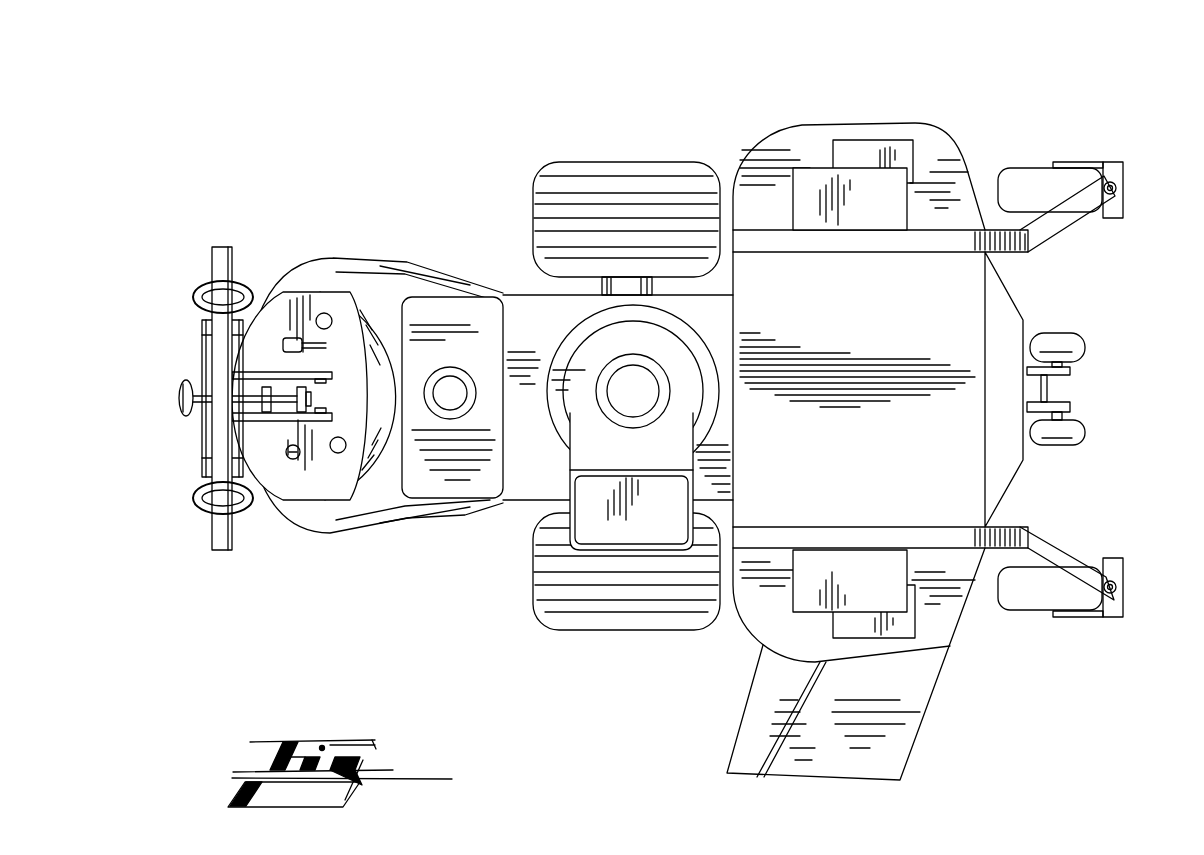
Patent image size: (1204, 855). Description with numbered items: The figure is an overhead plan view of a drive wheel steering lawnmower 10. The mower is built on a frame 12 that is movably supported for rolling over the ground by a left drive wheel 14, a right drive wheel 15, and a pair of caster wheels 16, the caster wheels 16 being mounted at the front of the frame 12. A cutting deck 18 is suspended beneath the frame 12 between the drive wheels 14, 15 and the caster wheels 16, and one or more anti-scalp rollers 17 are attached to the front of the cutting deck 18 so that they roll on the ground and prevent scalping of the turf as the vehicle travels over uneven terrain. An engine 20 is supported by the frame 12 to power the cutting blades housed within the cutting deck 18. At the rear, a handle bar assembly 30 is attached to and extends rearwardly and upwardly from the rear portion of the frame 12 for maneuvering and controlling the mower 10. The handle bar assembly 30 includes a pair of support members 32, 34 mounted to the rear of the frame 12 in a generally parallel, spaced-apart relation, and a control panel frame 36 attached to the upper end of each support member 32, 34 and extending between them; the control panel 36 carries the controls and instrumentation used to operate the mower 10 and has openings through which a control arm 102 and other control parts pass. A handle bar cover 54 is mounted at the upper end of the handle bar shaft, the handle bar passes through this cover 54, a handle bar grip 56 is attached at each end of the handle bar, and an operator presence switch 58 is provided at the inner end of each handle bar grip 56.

The lawnmower 10 is at (205, 112).
The frame 12 is at (1048, 230).
The left drive wheel 14 is at (650, 166).
The right drive wheel 15 is at (633, 523).
The caster wheels 16 is at (1042, 170).
The anti-scalp rollers 17 is at (1080, 353).
The cutting deck 18 is at (880, 130).
The engine 20 is at (593, 445).
The handle bar assembly 30 is at (327, 195).
The support member 32 is at (405, 262).
The support member 34 is at (415, 518).
The control panel frame 36 is at (288, 478).
The handle bar cover 54 is at (207, 433).
The handle bar grip 56 is at (228, 270).
The operator presence switch 58 is at (196, 296).
The control arm 102 is at (216, 392).